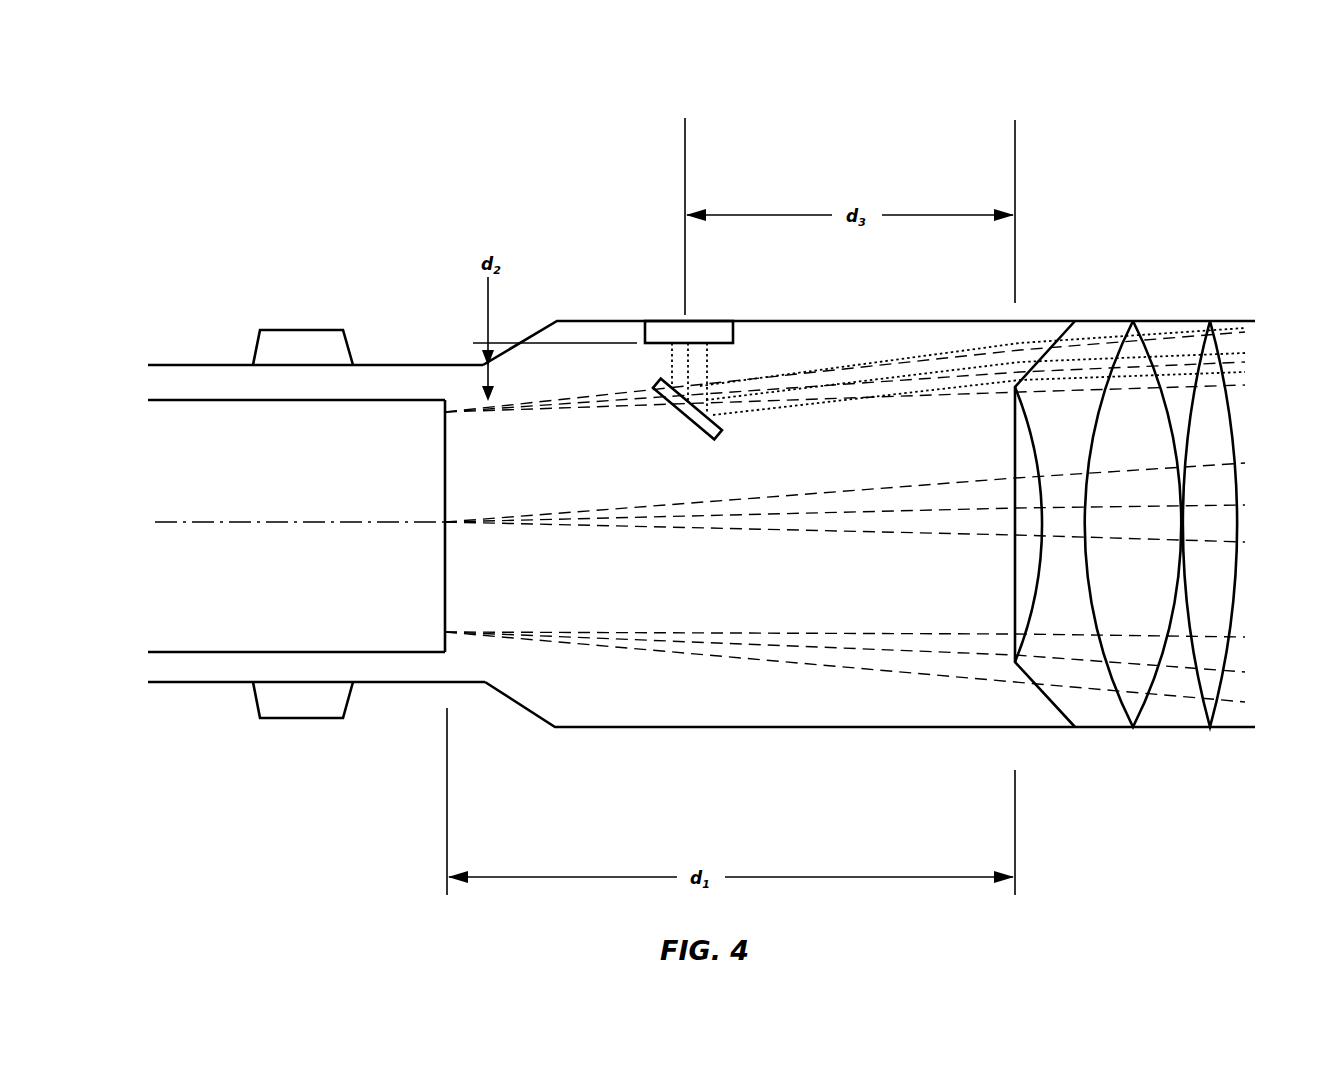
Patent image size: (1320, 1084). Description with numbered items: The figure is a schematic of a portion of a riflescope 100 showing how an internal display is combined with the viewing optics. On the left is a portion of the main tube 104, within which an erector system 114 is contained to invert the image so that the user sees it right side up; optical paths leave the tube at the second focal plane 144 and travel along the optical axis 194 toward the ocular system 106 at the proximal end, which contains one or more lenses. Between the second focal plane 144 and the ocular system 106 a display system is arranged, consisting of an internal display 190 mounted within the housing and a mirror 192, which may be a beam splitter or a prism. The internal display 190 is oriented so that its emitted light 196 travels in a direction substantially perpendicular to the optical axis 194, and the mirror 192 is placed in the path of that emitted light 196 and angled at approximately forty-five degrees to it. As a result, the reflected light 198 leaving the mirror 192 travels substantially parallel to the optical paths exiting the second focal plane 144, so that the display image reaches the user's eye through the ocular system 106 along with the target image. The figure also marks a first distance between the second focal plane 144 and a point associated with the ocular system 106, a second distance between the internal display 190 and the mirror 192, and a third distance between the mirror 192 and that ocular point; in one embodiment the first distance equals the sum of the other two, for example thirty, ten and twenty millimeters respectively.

The riflescope 100 is at (396, 163).
The main tube 104 is at (192, 365).
The erector system 114 is at (167, 652).
The second focal plane 144 is at (445, 598).
The optical axis 194 is at (333, 522).
The internal display 190 is at (645, 330).
The emitted light 196 is at (707, 363).
The mirror 192 is at (692, 428).
The reflected light 198 is at (1028, 343).
The ocular system 106 is at (1237, 740).